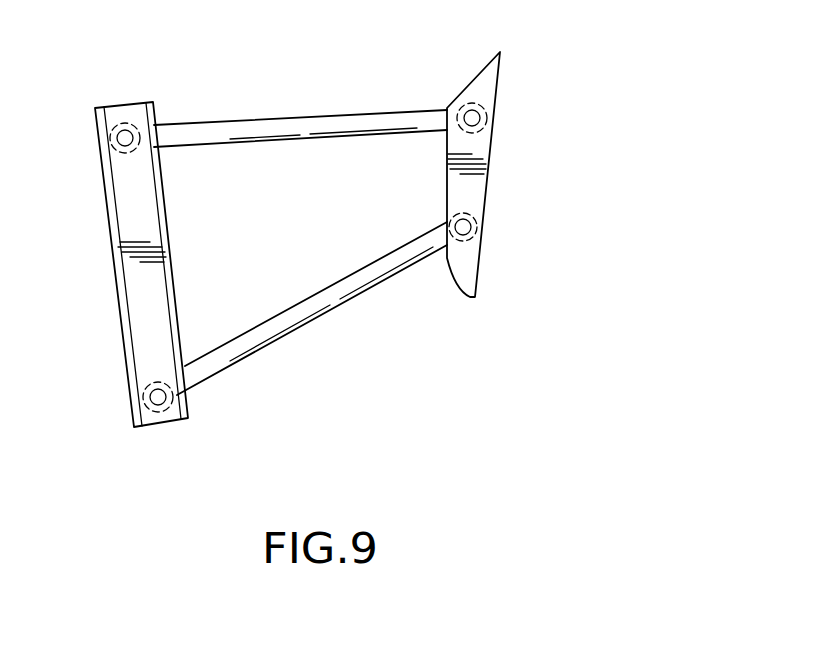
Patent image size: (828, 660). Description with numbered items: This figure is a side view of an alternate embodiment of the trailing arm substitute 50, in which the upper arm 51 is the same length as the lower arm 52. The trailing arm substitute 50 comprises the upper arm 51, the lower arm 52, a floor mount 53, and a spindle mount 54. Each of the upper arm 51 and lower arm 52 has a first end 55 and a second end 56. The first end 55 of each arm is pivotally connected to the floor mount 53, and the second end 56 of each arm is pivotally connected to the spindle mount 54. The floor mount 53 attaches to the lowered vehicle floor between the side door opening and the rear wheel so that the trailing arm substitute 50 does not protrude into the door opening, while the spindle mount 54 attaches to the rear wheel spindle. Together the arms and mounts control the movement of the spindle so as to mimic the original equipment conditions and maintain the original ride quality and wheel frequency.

The trailing arm substitute 50 is at (357, 248).
The upper arm 51 is at (300, 73).
The lower arm 52 is at (312, 308).
The floor mount 53 is at (533, 174).
The spindle mount 54 is at (156, 299).
The first end 55 is at (445, 243).
The second end 56 is at (174, 267).